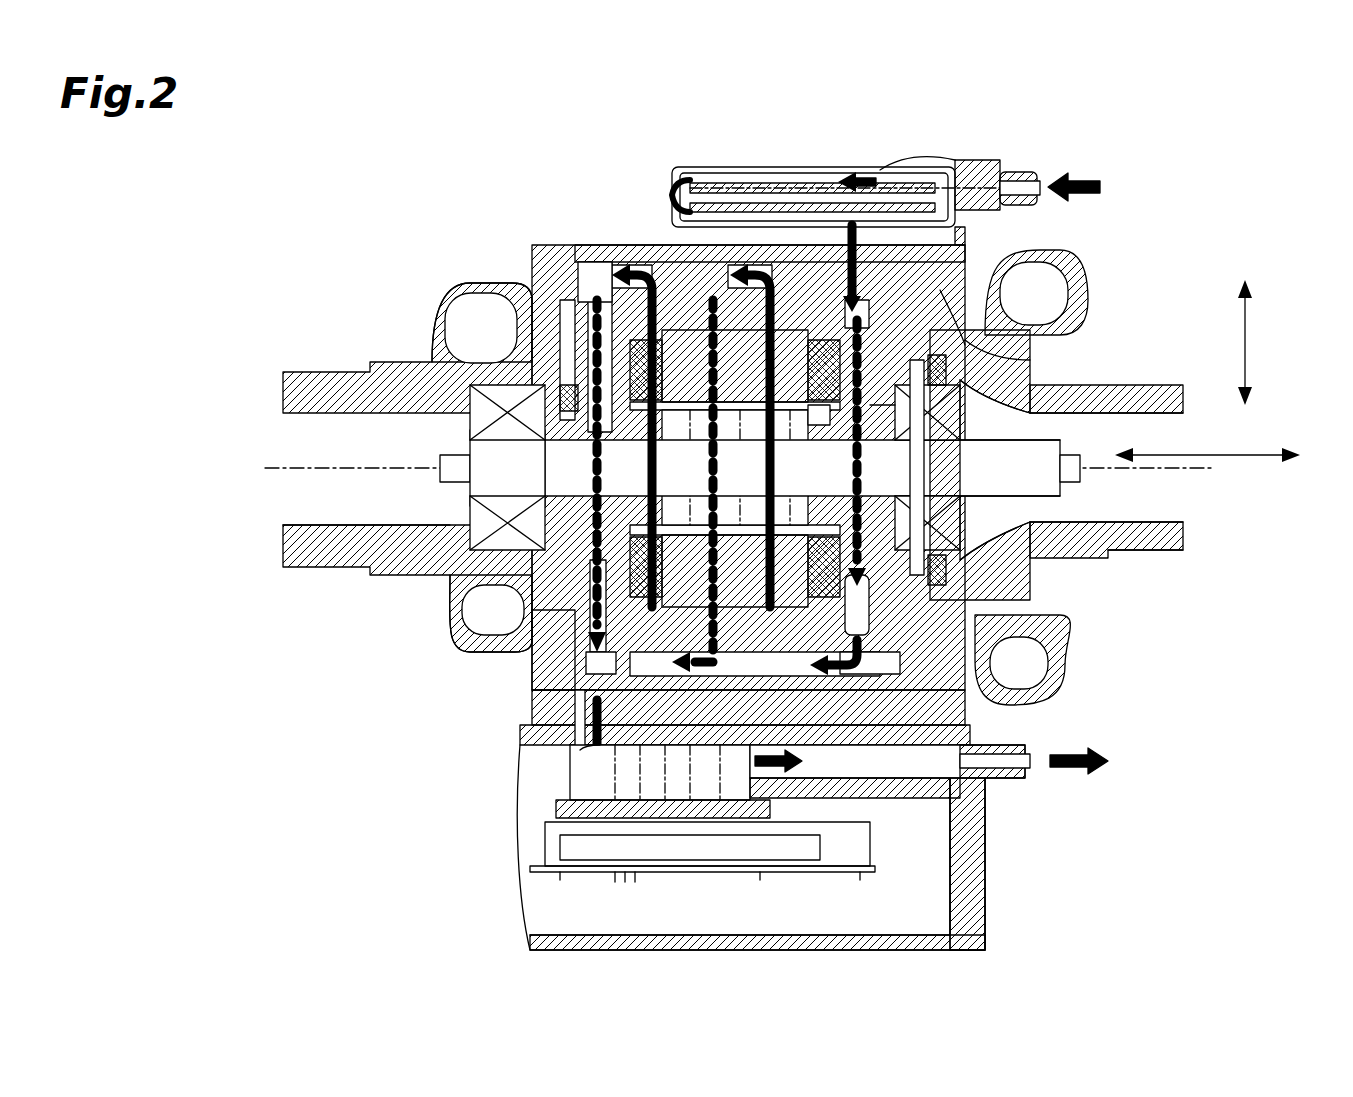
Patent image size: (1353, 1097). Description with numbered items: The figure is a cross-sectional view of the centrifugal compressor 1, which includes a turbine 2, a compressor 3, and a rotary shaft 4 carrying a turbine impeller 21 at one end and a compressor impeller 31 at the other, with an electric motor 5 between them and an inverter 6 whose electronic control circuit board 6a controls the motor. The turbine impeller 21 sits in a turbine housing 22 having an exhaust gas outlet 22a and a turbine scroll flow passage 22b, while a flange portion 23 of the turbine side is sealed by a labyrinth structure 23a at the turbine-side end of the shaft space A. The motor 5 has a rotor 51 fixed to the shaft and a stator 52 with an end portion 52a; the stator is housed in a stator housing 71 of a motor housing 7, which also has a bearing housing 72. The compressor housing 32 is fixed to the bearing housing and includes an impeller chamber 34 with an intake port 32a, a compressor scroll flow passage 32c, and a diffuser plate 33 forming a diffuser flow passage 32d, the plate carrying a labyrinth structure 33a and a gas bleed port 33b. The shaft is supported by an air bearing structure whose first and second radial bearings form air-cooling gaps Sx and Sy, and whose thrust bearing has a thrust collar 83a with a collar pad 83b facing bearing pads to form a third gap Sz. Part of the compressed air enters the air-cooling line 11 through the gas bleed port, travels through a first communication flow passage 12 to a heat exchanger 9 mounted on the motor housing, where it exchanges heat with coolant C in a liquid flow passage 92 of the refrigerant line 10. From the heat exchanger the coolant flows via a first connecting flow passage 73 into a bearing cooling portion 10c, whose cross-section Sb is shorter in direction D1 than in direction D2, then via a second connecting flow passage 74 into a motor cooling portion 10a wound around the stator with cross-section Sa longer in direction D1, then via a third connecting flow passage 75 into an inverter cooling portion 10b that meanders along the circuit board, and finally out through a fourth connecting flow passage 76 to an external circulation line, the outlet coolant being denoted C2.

The centrifugal compressor 1 is at (432, 168).
The turbine 2 is at (308, 368).
The compressor 3 is at (1165, 383).
The rotary shaft 4 is at (500, 548).
The electric motor 5 is at (726, 341).
The inverter 6 is at (555, 868).
The electronic control circuit board 6a is at (620, 855).
The motor housing 7 is at (578, 243).
The heat exchanger 9 is at (912, 152).
The refrigerant line 10 is at (878, 262).
The motor cooling portion 10a is at (612, 300).
The inverter cooling portion 10b is at (560, 822).
The bearing cooling portion 10c is at (965, 703).
The air-cooling line 11 is at (975, 162).
The first communication flow passage 12 is at (1002, 183).
The turbine impeller 21 is at (466, 428).
The turbine housing 22 is at (438, 312).
The exhaust gas outlet 22a is at (302, 514).
The turbine scroll flow passage 22b is at (465, 292).
The lower flange 23 is at (480, 602).
The labyrinth structure 23a is at (476, 500).
The compressor impeller 31 is at (962, 562).
The compressor housing 32 is at (1248, 545).
The intake port 32a is at (1180, 518).
The compressor scroll flow passage 32c is at (1060, 272).
The diffuser flow passage 32d is at (1020, 357).
The diffuser plate 33 is at (1020, 595).
The labyrinth structure 33a is at (1020, 522).
The gas bleed port 33b is at (1010, 338).
The impeller chamber 34 is at (1140, 548).
The rotor 51 is at (690, 372).
The stator 52 is at (735, 412).
The end portion of the stator 52a is at (770, 700).
The stator housing 71 is at (530, 645).
The bearing housing 72 is at (1000, 770).
The first connecting flow passage 73 is at (845, 390).
The second connecting flow passage 74 is at (960, 745).
The third connecting flow passage 75 is at (600, 702).
The fourth connecting flow passage 76 is at (945, 790).
The thrust collar 83a is at (940, 450).
The collar pad 83b is at (928, 484).
The liquid flow passage 92 is at (762, 180).
The shaft space A is at (822, 418).
The coolant C is at (1078, 175).
The coolant flow C2 is at (585, 762).
The flow passage cross-section of the motor cooling portion Sa is at (570, 662).
The flow passage cross-section of the bearing cooling portion Sb is at (875, 632).
The first air-cooling gap Sx is at (975, 332).
The second air-cooling gap Sy is at (565, 383).
The third air-cooling gap Sz is at (935, 402).
The direction along the rotary shaft D1 is at (1229, 472).
The direction orthogonal to the rotary shaft D2 is at (1278, 342).